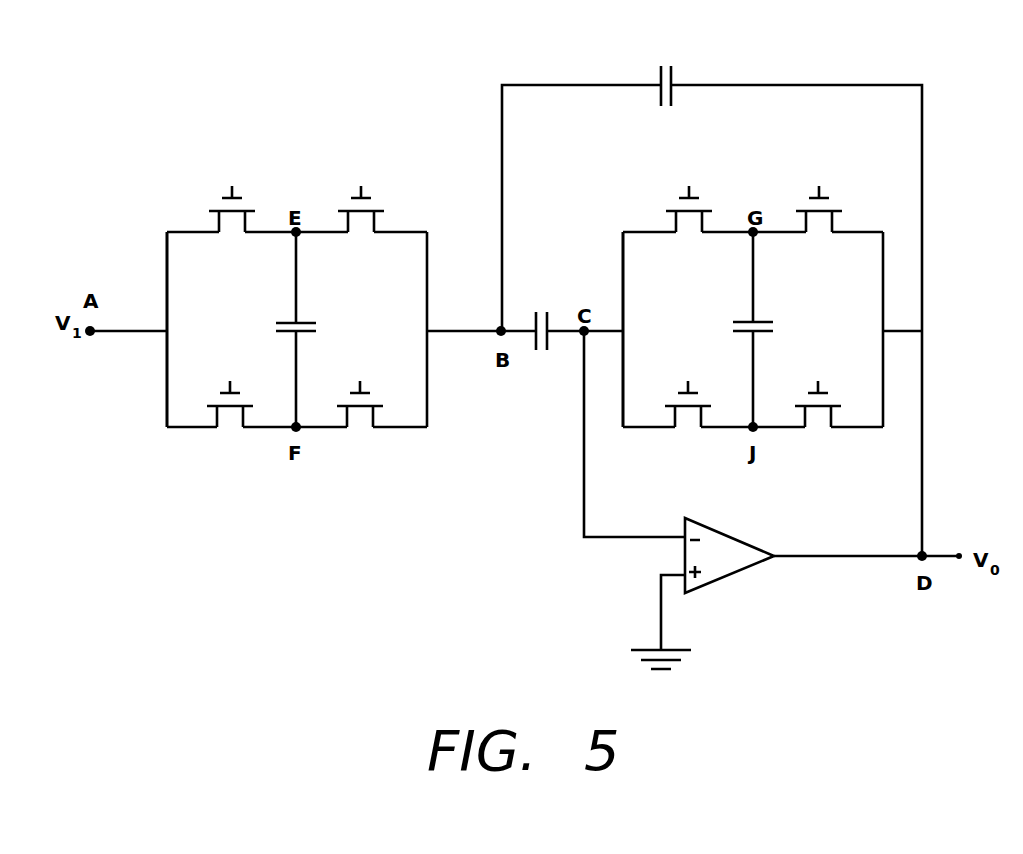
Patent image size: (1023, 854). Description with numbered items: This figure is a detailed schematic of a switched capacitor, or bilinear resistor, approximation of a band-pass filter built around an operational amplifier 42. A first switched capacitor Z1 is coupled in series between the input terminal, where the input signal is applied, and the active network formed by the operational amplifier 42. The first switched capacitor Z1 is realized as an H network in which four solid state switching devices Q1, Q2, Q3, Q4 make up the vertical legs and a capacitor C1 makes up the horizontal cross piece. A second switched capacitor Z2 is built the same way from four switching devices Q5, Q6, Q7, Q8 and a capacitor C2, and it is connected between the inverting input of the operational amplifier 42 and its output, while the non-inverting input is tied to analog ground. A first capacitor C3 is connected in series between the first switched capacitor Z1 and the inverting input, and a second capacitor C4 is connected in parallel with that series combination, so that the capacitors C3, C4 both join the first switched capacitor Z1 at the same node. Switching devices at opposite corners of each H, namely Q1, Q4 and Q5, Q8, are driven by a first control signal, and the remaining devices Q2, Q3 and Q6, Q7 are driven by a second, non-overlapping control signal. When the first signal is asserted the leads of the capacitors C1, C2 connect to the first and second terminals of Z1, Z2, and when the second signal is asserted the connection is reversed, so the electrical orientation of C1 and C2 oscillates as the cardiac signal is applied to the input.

The operational amplifier 42 is at (728, 574).
The first switching element Q1 is at (232, 211).
The second switching element Q2 is at (361, 211).
The third switching element Q3 is at (230, 411).
The fourth switching element Q4 is at (360, 411).
The fifth switching element Q5 is at (689, 211).
The sixth switching element Q6 is at (819, 211).
The seventh switching element Q7 is at (688, 411).
The eighth switching element Q8 is at (818, 411).
The first capacitive element C1 is at (289, 329).
The second capacitive element C2 is at (747, 329).
The first capacitor C3 is at (544, 351).
The second capacitor C4 is at (668, 69).
The first switched capacitor Z1 is at (163, 185).
The second switched capacitor Z2 is at (613, 185).